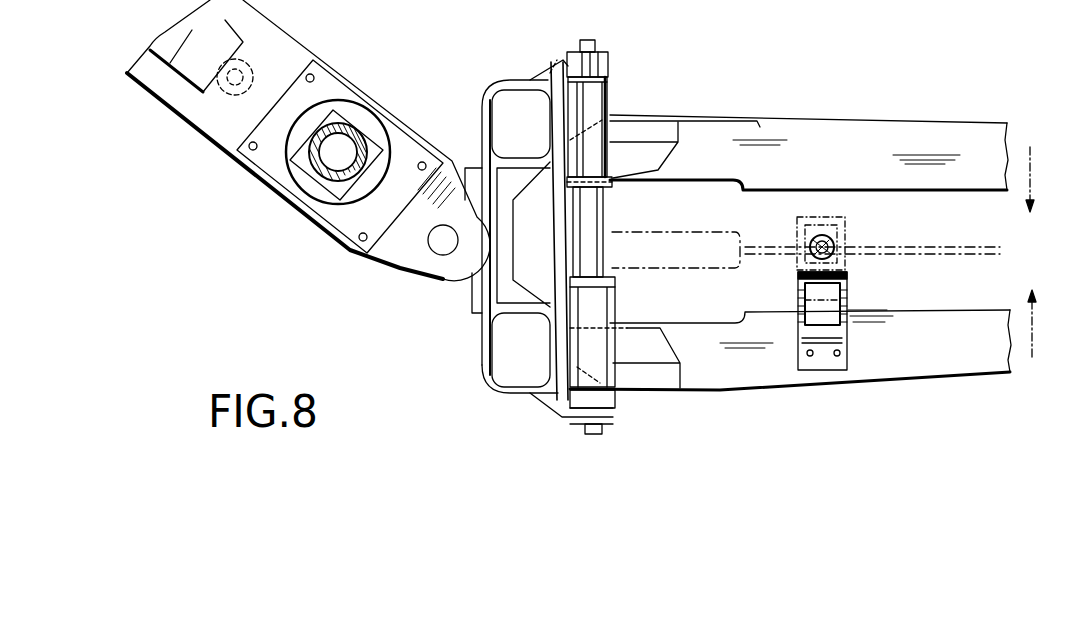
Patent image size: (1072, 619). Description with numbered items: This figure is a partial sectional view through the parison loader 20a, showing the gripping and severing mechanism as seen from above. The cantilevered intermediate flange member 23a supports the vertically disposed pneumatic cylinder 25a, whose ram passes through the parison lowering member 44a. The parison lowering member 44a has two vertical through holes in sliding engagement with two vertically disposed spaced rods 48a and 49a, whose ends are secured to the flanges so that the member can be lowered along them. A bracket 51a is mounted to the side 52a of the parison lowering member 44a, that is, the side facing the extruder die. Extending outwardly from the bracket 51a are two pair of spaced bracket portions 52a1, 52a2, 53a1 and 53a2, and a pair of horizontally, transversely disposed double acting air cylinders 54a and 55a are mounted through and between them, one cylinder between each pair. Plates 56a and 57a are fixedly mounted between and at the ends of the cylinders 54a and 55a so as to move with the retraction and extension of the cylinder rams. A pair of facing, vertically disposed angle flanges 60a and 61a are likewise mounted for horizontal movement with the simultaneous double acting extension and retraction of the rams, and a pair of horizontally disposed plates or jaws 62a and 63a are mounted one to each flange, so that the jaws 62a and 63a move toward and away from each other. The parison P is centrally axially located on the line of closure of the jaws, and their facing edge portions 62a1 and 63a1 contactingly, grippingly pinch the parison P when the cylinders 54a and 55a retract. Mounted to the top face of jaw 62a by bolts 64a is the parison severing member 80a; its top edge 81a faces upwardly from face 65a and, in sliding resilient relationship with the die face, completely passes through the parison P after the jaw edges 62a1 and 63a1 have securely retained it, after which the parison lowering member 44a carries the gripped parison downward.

The parison loader 20a is at (233, 200).
The cantilevered intermediate flange member 23a is at (340, 250).
The pneumatic cylinder 25a is at (347, 100).
The rod 48a is at (230, 93).
The rod 49a is at (442, 255).
The parison lowering member 44a is at (460, 277).
The bracket 51a is at (482, 107).
The side of parison lowering member 52a is at (542, 70).
The bracket portion 52a2 is at (638, 54).
The bracket portion 53a2 is at (600, 53).
The bracket portion 52a1 is at (531, 421).
The bracket portion 53a1 is at (583, 407).
The plate 57a is at (607, 70).
The double acting air cylinder 54a is at (783, 232).
The double acting air cylinder 55a is at (597, 225).
The plate 56a is at (615, 397).
The angle flange 61a is at (653, 123).
The jaw 63a is at (927, 130).
The edge portion 63a1 is at (983, 193).
The angle flange 60a is at (662, 377).
The jaw 62a is at (953, 367).
The edge portion 62a1 is at (967, 308).
The parison P is at (830, 242).
The parison severing member 80a is at (858, 302).
The top edge 81a is at (847, 272).
The face 65a is at (797, 287).
The bolts 64a is at (810, 356).